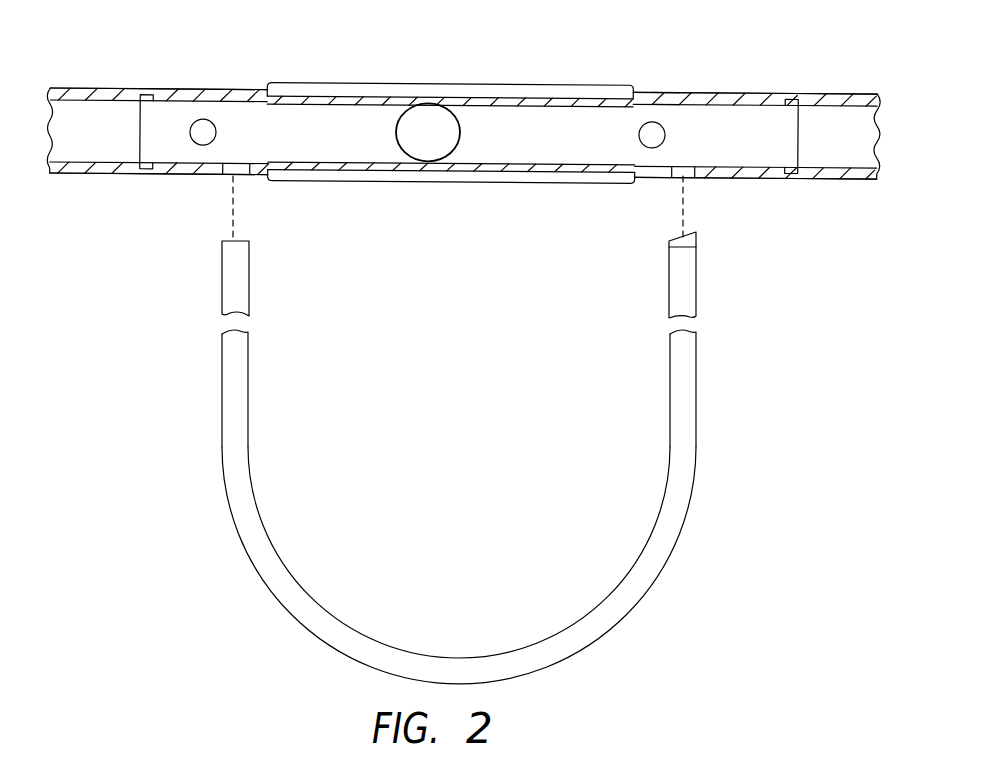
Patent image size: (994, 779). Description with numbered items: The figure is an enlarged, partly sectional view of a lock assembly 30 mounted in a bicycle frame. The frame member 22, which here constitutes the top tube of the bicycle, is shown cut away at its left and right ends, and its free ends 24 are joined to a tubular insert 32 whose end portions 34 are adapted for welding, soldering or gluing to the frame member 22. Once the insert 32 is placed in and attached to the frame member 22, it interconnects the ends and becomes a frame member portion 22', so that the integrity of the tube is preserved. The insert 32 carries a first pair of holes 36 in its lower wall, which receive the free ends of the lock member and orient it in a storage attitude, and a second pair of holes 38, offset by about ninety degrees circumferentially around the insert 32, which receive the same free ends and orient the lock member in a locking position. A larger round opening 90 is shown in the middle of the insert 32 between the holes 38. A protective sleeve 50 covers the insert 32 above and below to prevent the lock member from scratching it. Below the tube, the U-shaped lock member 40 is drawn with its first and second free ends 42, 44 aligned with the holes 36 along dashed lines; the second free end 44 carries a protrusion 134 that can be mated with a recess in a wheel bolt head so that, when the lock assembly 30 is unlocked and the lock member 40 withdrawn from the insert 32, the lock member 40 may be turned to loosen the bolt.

The lock assembly 30 is at (416, 59).
The frame member 22 is at (466, 119).
The frame member portion 22' is at (698, 82).
The free ends of the frame member 24 is at (162, 175).
The tubular insert 32 is at (185, 89).
The end portions of the insert 34 is at (150, 94).
The first pair of holes 36 is at (240, 173).
The second pair of holes 38 is at (216, 134).
The aperture 90 is at (461, 131).
The protective sleeve 50 is at (433, 85).
The lock member 40 is at (220, 386).
The first free end 42 is at (216, 254).
The second free end 44 is at (708, 251).
The protrusion 134 is at (699, 237).